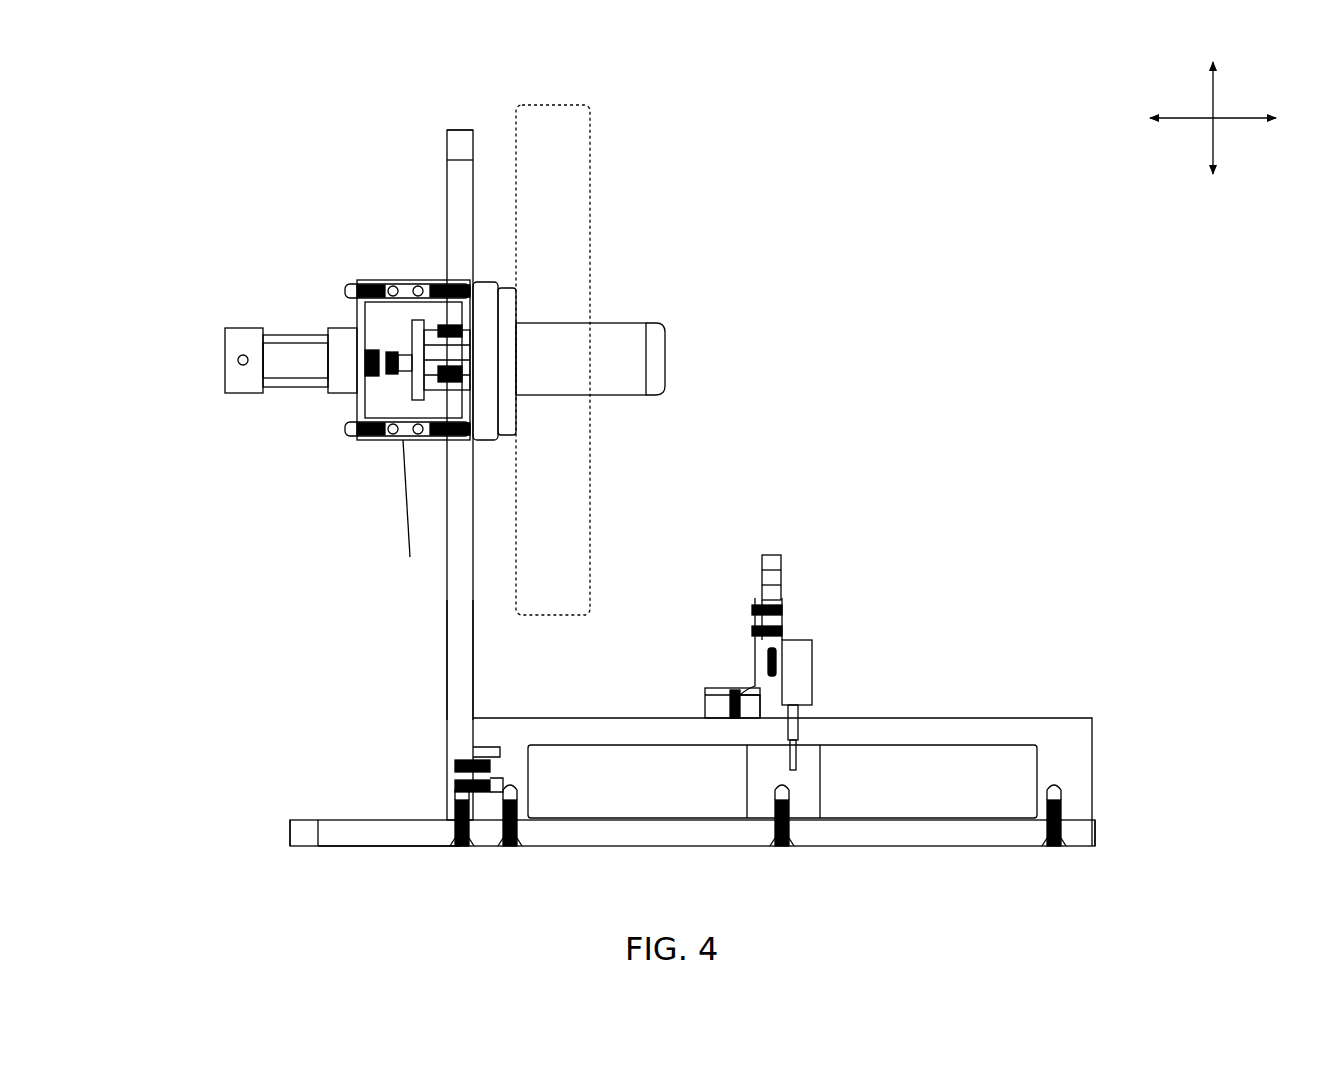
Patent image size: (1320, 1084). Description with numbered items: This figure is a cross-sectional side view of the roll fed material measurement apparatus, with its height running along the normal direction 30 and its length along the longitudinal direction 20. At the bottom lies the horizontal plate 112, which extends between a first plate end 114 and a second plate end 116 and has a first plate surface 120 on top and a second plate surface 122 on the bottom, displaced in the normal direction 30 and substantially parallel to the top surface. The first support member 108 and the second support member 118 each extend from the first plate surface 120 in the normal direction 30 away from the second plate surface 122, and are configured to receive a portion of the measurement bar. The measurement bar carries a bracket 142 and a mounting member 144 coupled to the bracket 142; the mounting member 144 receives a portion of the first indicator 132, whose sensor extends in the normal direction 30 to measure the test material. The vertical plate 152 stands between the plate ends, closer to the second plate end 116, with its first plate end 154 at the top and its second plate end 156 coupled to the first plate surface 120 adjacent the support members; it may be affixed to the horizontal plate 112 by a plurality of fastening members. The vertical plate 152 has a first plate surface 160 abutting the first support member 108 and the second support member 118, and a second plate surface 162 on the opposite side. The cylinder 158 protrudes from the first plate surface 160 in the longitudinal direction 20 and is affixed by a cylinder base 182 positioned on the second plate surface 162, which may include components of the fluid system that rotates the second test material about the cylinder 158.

The longitudinal direction 20 is at (1226, 118).
The normal direction 30 is at (1209, 106).
The first support member 108 is at (222, 360).
The horizontal plate 112 is at (345, 818).
The first plate end 114 is at (1097, 836).
The second plate end 116 is at (286, 834).
The second support member 118 is at (1012, 717).
The first plate surface 120 is at (408, 815).
The second plate surface 122 is at (376, 849).
The first indicator 132 is at (803, 666).
The bracket 142 is at (756, 580).
The mounting member 144 is at (779, 557).
The vertical plate 152 is at (448, 637).
The first plate end 154 is at (464, 127).
The second plate end 156 is at (479, 822).
The cylinder 158 is at (606, 320).
The first plate surface 160 is at (478, 683).
The second plate surface 162 is at (445, 695).
The cylinder base 182 is at (355, 407).